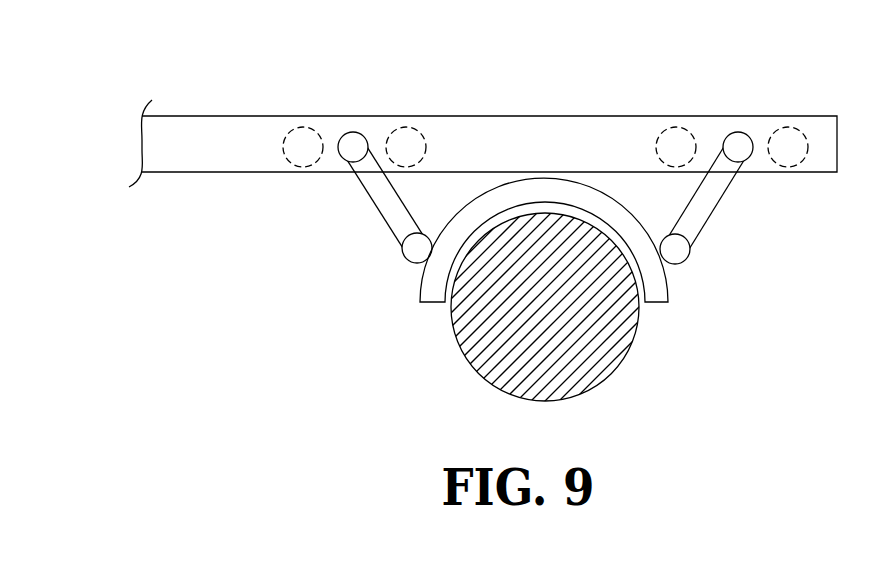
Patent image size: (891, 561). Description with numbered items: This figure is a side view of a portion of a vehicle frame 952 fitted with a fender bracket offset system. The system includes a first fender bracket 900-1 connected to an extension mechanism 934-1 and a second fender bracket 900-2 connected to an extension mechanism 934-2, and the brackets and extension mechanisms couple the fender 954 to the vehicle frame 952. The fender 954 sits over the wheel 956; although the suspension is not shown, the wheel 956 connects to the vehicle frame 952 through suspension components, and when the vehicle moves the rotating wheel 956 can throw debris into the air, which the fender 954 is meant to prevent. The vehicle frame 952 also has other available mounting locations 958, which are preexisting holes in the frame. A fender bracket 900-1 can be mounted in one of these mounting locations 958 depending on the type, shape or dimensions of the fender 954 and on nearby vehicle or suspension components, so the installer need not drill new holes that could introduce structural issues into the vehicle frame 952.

The vehicle frame 952 is at (140, 143).
The other available mounting locations 958 is at (299, 126).
The first fender bracket 900-1 is at (332, 228).
The second fender bracket 900-2 is at (760, 229).
The extension mechanism 934-1 is at (402, 249).
The extension mechanism 934-2 is at (690, 252).
The fender 954 is at (421, 300).
The wheel 956 is at (452, 336).